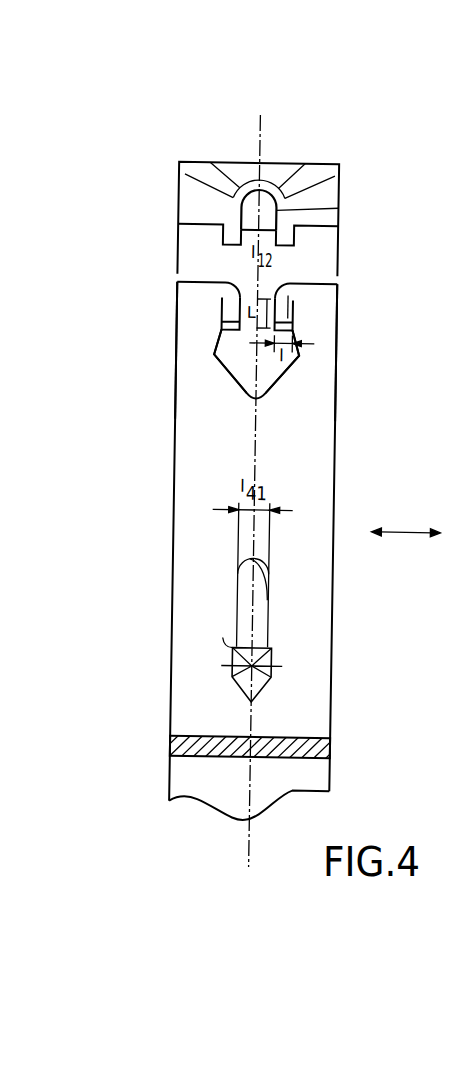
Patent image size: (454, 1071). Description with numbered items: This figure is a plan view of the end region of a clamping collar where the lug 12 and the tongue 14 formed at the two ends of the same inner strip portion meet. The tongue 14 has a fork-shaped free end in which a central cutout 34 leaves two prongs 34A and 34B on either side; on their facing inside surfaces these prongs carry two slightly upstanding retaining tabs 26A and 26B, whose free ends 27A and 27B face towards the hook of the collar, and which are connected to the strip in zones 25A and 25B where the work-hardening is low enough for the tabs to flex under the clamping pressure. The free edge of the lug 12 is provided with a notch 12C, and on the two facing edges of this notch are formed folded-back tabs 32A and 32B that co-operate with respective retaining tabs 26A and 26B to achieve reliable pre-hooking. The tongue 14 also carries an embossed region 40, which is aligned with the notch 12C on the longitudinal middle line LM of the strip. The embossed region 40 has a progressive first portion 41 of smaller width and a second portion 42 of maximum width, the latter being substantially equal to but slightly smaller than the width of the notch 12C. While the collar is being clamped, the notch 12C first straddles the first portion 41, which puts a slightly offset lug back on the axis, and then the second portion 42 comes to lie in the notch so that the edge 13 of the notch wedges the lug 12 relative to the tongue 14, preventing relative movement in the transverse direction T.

The lug 12 is at (249, 160).
The notch 12C is at (266, 162).
The edge of the notch 13 is at (241, 209).
The folded-back tab 32B is at (222, 236).
The folded-back tab 32A is at (297, 237).
The connection zone 25B is at (234, 283).
The connection zone 25A is at (281, 283).
The retaining tab 26B is at (237, 310).
The retaining tab 26A is at (290, 312).
The prong 34B is at (189, 326).
The prong 34A is at (323, 314).
The free end of retaining tab 27B is at (218, 354).
The free end of retaining tab 27A is at (298, 322).
The central cutout 34 is at (246, 364).
The tongue 14 is at (300, 438).
The embossed region 40 is at (285, 618).
The first portion of embossed region 41 is at (247, 580).
The second portion of embossed region 42 is at (248, 678).
The transverse direction T is at (406, 548).
The longitudinal middle line LM is at (256, 848).